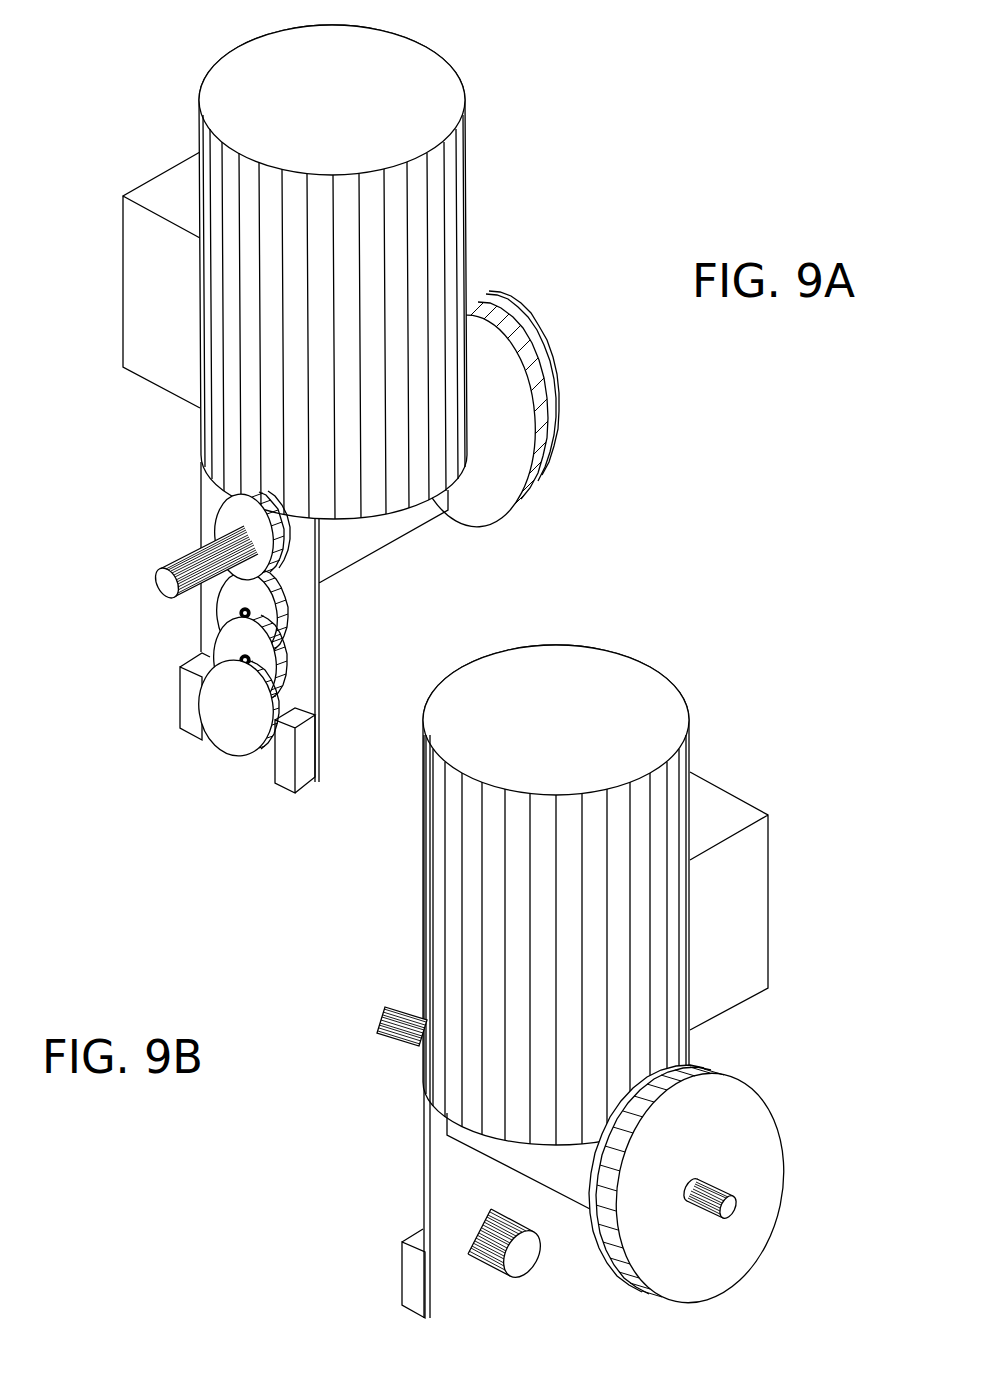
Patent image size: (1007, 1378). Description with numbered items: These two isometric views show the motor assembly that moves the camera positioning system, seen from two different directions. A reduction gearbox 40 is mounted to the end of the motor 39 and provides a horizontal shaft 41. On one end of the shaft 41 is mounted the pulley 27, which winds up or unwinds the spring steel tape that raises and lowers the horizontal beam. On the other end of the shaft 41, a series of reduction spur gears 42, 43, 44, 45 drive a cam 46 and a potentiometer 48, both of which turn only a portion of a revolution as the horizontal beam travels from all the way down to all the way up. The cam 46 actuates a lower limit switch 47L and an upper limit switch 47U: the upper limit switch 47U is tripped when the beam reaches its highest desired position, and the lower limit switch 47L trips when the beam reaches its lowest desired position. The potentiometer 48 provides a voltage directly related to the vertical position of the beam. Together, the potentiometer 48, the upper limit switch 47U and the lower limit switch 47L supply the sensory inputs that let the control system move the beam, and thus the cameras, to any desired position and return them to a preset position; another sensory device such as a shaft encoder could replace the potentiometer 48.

In FIG. 9A, the pulley 27 is at (510, 437).
In FIG. 9B, the pulley 27 is at (748, 1140).
In FIG. 9A, the motor 39 is at (392, 62).
In FIG. 9B, the motor 39 is at (597, 675).
In FIG. 9A, the reduction gearbox 40 is at (397, 527).
In FIG. 9B, the reduction gearbox 40 is at (482, 1147).
In FIG. 9A, the horizontal shaft 41 is at (167, 582).
In FIG. 9B, the horizontal shaft 41 is at (383, 1006).
In FIG. 9A, the reduction spur gear 42 is at (222, 518).
In FIG. 9A, the reduction spur gear 43 is at (268, 553).
In FIG. 9A, the reduction spur gear 44 is at (268, 615).
In FIG. 9A, the reduction spur gear 45 is at (268, 663).
In FIG. 9A, the cam 46 is at (243, 713).
In FIG. 9A, the upper limit switch 47U is at (193, 707).
In FIG. 9A, the lower limit switch 47L is at (277, 758).
In FIG. 9B, the lower limit switch 47L is at (412, 1278).
In FIG. 9B, the potentiometer 48 is at (517, 1260).